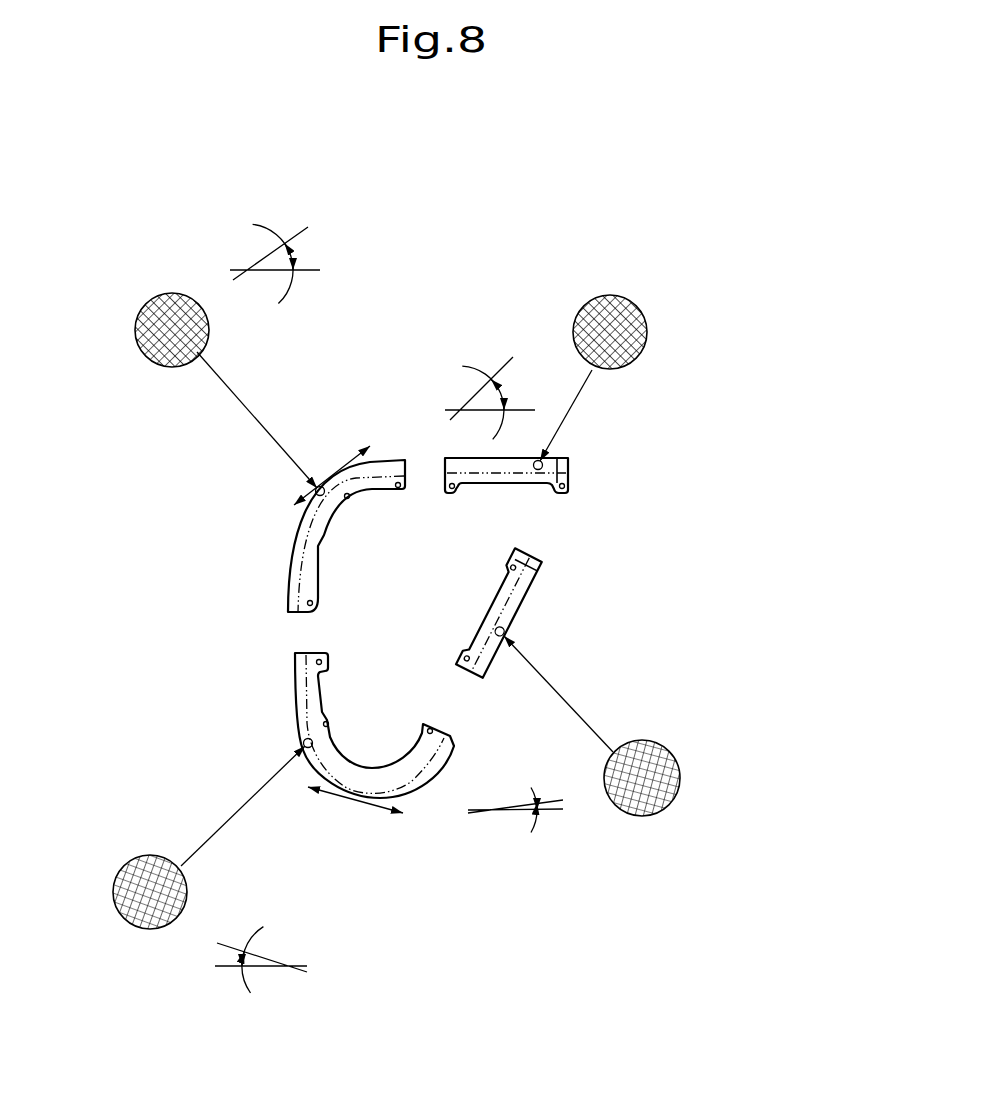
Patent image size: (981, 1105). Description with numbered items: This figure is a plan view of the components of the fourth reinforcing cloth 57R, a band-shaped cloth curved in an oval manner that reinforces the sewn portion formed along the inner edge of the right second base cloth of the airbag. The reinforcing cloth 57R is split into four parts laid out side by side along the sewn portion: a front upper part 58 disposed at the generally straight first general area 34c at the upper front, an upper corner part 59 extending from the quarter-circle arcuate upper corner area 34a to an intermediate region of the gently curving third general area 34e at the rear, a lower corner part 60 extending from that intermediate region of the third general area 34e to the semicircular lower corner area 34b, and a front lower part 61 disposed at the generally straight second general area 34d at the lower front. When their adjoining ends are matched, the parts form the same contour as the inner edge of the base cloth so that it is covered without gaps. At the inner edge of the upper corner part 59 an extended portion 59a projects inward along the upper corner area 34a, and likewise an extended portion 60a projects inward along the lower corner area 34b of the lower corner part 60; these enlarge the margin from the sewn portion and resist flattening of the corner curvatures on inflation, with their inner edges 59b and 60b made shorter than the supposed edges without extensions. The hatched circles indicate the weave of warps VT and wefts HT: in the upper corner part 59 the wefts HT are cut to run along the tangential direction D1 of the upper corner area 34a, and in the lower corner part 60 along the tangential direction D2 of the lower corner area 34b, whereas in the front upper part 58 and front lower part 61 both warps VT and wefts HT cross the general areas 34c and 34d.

The fourth reinforcing cloth 57R is at (632, 451).
The front upper part 58 is at (502, 484).
The upper corner part 59 is at (318, 575).
The extended portion 59a is at (370, 490).
The inner edge 59b is at (348, 495).
The lower corner part 60 is at (297, 718).
The extended portion 60a is at (337, 757).
The inner edge 60b is at (387, 765).
The front lower part 61 is at (527, 601).
The upper corner area 34a is at (297, 535).
The lower corner area 34b is at (353, 778).
The first general area 34c is at (533, 478).
The second general area 34d is at (514, 618).
The third general area 34e is at (293, 665).
The wefts HT is at (155, 298).
The warps VT is at (143, 352).
The tangential direction D1 is at (338, 468).
The tangential direction D2 is at (388, 812).